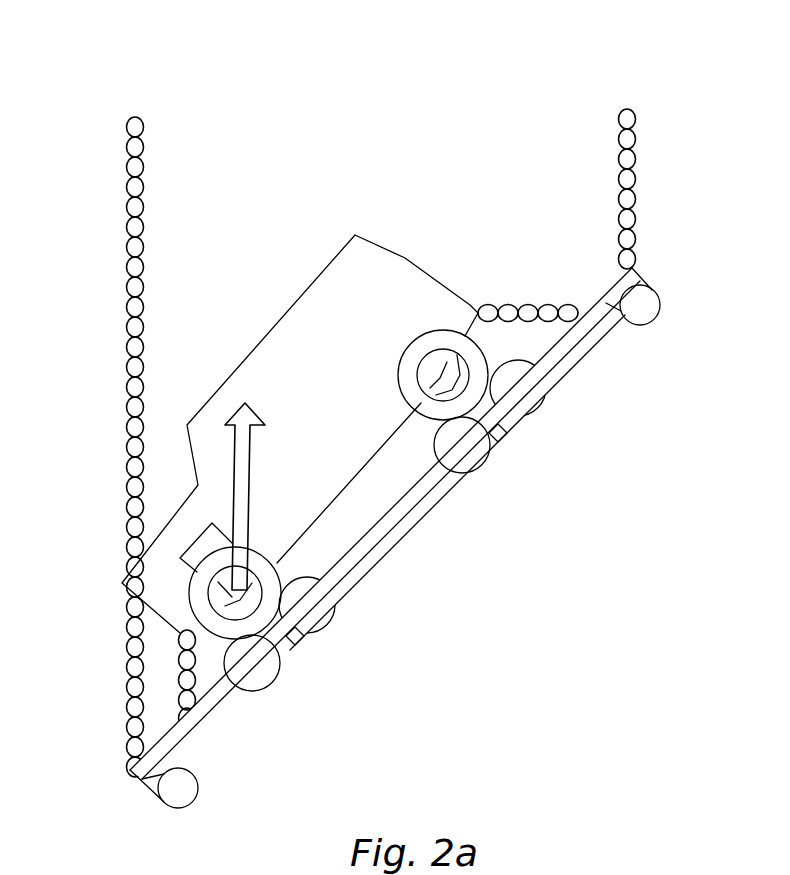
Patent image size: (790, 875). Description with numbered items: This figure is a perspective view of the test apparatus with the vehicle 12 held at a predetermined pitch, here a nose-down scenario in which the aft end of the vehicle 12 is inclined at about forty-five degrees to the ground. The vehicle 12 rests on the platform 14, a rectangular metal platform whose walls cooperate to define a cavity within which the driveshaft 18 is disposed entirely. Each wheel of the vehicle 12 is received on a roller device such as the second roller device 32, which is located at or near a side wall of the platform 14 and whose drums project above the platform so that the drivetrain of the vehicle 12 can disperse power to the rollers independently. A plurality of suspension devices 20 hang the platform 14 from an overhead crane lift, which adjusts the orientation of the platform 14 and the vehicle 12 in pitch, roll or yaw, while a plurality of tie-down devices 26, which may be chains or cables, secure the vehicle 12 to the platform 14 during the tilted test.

The vehicle 12 is at (377, 227).
The platform 14 is at (575, 355).
The driveshaft 18 is at (404, 538).
The suspension devices 20 is at (128, 120).
The tie-down devices 26 is at (508, 298).
The second roller device 32 is at (519, 428).